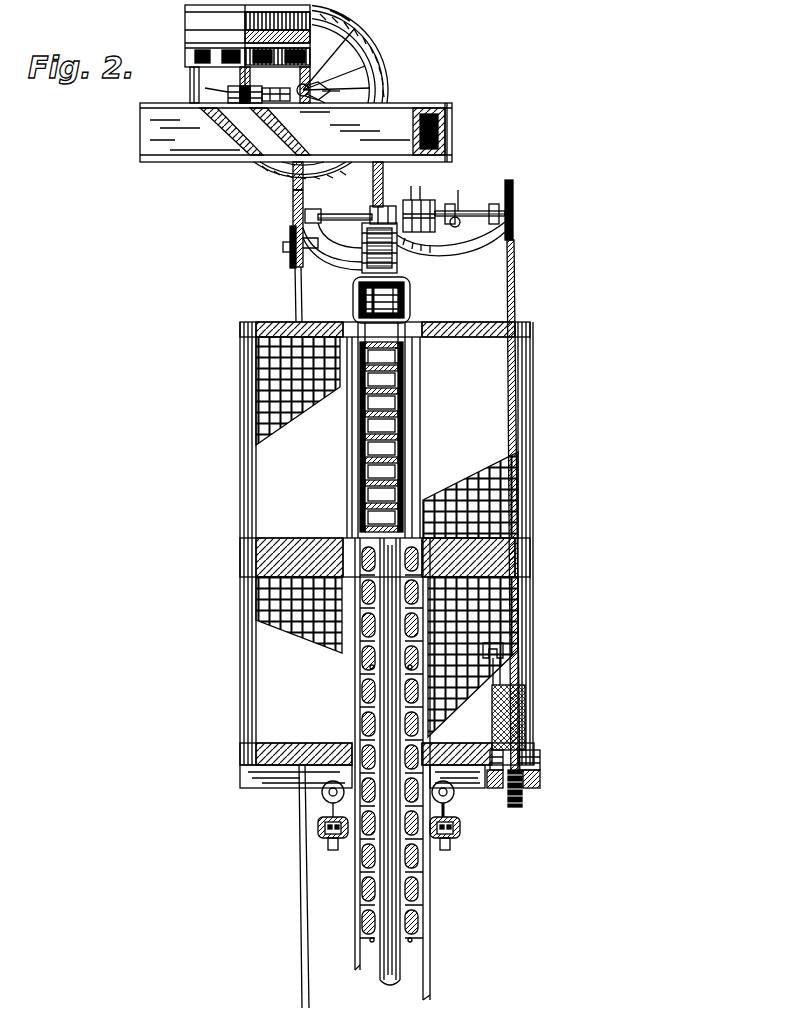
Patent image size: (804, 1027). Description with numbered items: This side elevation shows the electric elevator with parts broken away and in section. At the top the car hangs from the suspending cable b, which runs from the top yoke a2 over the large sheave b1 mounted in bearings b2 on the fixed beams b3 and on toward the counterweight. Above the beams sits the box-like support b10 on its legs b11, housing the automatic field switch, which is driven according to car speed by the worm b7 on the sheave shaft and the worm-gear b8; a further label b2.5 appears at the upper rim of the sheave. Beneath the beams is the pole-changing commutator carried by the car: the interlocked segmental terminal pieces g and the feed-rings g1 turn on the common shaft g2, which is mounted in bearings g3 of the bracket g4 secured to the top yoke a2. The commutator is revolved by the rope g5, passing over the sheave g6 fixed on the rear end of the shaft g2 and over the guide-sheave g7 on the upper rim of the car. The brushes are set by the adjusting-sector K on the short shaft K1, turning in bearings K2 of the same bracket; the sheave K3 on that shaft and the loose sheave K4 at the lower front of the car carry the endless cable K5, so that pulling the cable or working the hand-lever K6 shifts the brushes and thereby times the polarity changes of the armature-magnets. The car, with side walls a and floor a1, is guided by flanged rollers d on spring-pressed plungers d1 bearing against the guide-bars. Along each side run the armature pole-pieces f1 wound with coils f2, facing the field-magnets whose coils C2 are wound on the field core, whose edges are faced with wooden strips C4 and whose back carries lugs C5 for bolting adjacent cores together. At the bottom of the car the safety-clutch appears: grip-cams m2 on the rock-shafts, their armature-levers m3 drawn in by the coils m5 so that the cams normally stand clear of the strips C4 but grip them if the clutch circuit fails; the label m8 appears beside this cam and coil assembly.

The motor housing b10 is at (185, 24).
The wheel rim b2.5 is at (352, 22).
The sheave b1 is at (333, 70).
The cable b is at (375, 75).
The housing support leg b11 is at (240, 76).
The motor b8 is at (205, 90).
The bearings b2 is at (330, 94).
The diagonal brace b7 is at (278, 112).
The fixed beams b3 is at (430, 125).
The feed-rings g1 is at (412, 185).
The segmental terminal pieces g is at (428, 200).
The adjusting-sector K is at (460, 184).
The bearings K2 is at (452, 204).
The short shaft K1 is at (458, 214).
The sheave K3 is at (516, 190).
The endless cable K5 is at (514, 262).
The sheave g6 is at (290, 198).
The rope g5 is at (293, 219).
The bearings g3 is at (310, 209).
The commutator shaft g2 is at (340, 214).
The guide-sheave g7 is at (290, 258).
The bracket g4 is at (335, 258).
The top yoke a2 is at (397, 264).
The yoke-headed plungers d1 is at (366, 303).
The guide-rollers d is at (410, 300).
The armature coils f2 is at (400, 380).
The armature pole-pieces f1 is at (395, 404).
The side walls a is at (256, 462).
The wooden strips C4 is at (355, 524).
The lugs C5 is at (410, 667).
The field-magnet coils C2 is at (370, 722).
The floor a1 is at (290, 785).
The hand-lever K6 is at (494, 664).
The grip-cams m2 is at (322, 797).
The armature-lever m3 is at (330, 810).
The clutch coils m5 is at (333, 840).
The stem m8 is at (455, 815).
The loose sheave K4 is at (524, 800).